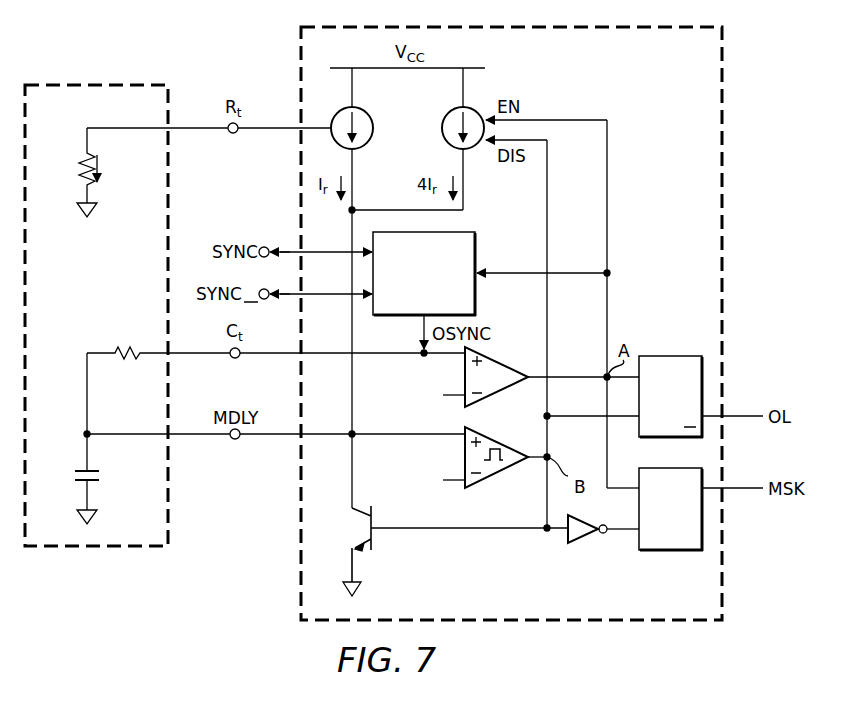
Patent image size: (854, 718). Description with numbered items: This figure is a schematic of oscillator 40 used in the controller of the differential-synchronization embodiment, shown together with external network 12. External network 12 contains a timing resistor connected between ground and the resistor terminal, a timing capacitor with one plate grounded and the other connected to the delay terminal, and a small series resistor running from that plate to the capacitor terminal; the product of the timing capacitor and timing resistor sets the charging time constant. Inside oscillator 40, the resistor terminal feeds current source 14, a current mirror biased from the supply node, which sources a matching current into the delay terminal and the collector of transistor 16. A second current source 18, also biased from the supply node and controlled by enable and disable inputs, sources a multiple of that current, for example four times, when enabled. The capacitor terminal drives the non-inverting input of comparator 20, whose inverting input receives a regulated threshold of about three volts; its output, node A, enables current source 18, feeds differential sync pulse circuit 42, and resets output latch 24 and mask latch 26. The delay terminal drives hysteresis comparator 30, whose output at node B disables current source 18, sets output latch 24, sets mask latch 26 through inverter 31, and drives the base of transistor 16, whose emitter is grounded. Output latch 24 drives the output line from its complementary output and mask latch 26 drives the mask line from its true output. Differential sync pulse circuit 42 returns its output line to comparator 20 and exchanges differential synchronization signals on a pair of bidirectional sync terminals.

The external network 12 is at (66, 128).
The current source 14 is at (366, 113).
The transistor 16 is at (376, 533).
The second current source 18 is at (446, 139).
The comparator 20 is at (506, 392).
The output latch 24 is at (668, 356).
The mask latch 26 is at (672, 551).
The comparator 30 is at (500, 478).
The inverter 31 is at (585, 545).
The oscillator 40 is at (692, 66).
The differential sync pulse circuit 42 is at (478, 245).